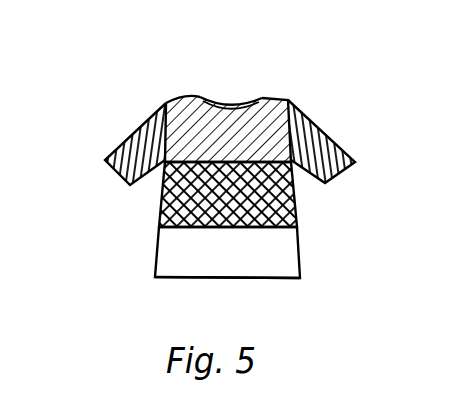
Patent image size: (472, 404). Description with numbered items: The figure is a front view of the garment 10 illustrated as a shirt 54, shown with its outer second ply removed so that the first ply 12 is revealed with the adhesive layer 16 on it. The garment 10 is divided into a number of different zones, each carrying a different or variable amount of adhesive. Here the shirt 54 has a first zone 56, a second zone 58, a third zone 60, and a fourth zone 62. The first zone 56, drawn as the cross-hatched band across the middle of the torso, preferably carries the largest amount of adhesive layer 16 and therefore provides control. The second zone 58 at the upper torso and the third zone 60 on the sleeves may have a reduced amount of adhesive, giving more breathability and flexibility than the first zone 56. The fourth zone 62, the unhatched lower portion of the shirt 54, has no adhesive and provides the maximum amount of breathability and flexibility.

The garment 10 is at (310, 85).
The first ply 12 is at (302, 275).
The adhesive layer 16 is at (156, 99).
The shirt 54 is at (156, 223).
The first zone 56 is at (297, 199).
The second zone 58 is at (245, 102).
The third zone 60 is at (118, 176).
The fourth zone 62 is at (218, 245).